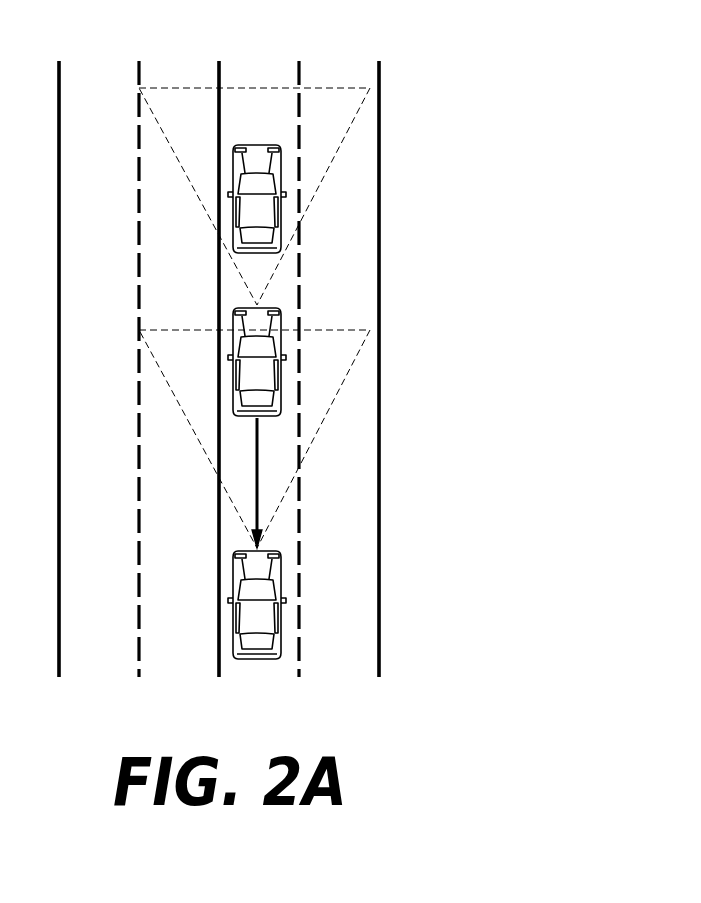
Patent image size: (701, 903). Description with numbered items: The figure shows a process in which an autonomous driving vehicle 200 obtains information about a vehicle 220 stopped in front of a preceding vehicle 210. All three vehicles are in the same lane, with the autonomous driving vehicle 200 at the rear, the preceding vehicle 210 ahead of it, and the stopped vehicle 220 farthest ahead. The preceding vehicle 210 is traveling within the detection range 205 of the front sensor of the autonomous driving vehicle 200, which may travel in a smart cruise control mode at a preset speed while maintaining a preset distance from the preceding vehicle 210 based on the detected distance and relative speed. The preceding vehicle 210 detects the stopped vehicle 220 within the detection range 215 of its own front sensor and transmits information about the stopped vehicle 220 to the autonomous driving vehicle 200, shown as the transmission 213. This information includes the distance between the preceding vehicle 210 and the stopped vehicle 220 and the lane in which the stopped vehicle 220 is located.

The autonomous driving vehicle 200 is at (282, 590).
The detection range of front sensor of autonomous driving vehicle 205 is at (190, 418).
The preceding vehicle 210 is at (281, 322).
The transmission of information about stopped vehicle 213 is at (259, 498).
The detection range of front sensor of preceding vehicle 215 is at (322, 88).
The stopped vehicle 220 is at (240, 237).